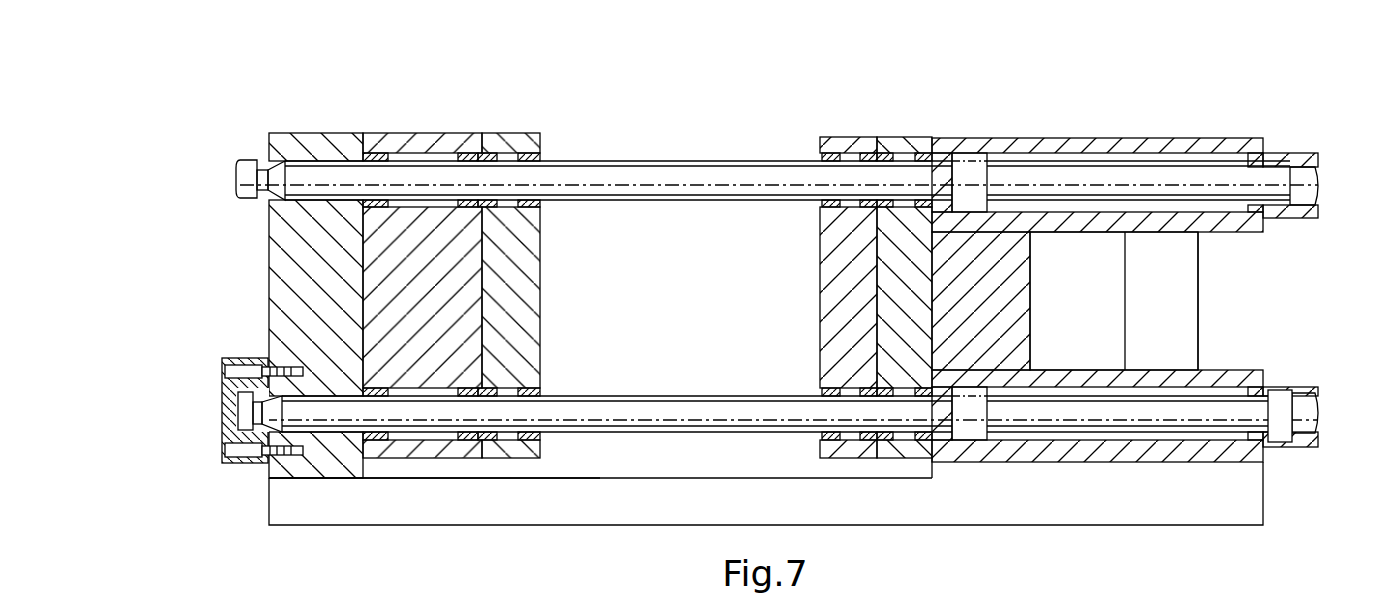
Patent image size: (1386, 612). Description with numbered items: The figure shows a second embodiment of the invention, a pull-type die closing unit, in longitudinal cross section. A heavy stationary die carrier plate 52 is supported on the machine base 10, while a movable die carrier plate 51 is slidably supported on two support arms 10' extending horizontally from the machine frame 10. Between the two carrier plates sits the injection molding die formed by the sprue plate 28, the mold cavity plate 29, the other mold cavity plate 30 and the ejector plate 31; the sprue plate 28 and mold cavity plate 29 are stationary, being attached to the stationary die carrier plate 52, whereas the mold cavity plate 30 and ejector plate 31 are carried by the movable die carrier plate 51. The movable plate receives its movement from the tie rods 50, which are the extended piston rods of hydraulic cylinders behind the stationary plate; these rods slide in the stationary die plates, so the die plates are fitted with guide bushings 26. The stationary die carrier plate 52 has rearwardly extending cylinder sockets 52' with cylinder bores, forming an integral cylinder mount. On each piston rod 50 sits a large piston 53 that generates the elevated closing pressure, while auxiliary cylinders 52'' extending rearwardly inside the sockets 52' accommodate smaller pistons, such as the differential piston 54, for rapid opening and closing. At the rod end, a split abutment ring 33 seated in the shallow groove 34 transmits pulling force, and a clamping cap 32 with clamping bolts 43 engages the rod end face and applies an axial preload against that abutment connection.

The machine base 10 is at (766, 512).
The support arms 10' is at (434, 519).
The guide bushings 26 is at (380, 153).
The sprue plate 28 is at (897, 310).
The mold cavity plate 29 is at (825, 251).
The mold cavity plate 30 is at (522, 307).
The ejector plate 31 is at (470, 244).
The clamping cap 32 is at (224, 393).
The split abutment ring 33 is at (247, 361).
The shallow groove 34 is at (256, 160).
The clamping bolts 43 is at (224, 450).
The tie rods 50 is at (668, 408).
The movable die carrier plate 51 is at (317, 143).
The stationary die carrier plate 52 is at (1125, 260).
The cylinder sockets 52' is at (1114, 307).
The auxiliary cylinders 52'' is at (1301, 395).
The piston 53 is at (970, 408).
The differential piston 54 is at (1285, 447).